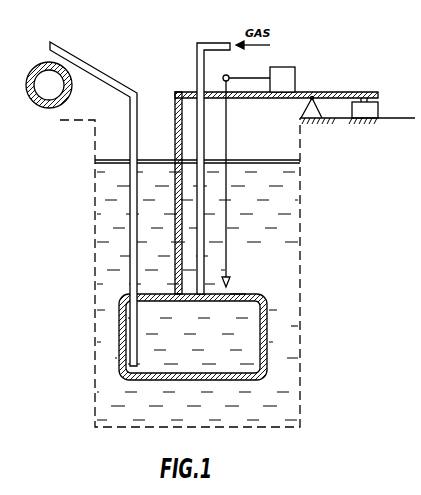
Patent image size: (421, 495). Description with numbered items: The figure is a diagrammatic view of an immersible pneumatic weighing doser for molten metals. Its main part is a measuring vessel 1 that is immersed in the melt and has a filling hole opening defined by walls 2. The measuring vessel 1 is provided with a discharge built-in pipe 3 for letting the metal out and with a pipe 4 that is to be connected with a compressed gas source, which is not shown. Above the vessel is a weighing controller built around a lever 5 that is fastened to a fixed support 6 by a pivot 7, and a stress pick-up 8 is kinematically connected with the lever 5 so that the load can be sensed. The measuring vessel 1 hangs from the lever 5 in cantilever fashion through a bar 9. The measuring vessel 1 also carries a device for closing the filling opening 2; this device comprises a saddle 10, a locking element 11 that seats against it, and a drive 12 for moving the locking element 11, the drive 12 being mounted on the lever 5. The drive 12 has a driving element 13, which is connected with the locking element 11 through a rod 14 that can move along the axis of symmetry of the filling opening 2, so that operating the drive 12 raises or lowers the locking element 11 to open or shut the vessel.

The measuring vessel 1 is at (257, 340).
The walls of the filling hole opening 2 is at (228, 298).
The discharge built-in pipe 3 is at (134, 178).
The pipe 4 is at (197, 75).
The lever 5 is at (306, 92).
The fixed support 6 is at (312, 98).
The pivot 7 is at (313, 97).
The stress pick-up 8 is at (378, 104).
The bar 9 is at (178, 140).
The saddle 10 is at (237, 291).
The locking element 11 is at (231, 285).
The drive 12 is at (238, 78).
The driving element 13 is at (286, 72).
The rod 14 is at (227, 120).